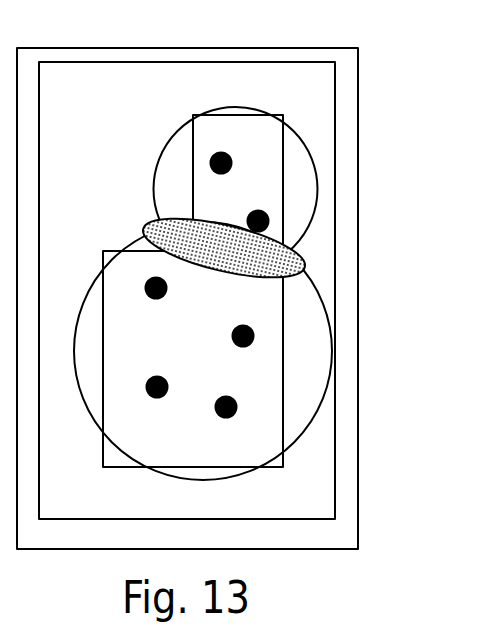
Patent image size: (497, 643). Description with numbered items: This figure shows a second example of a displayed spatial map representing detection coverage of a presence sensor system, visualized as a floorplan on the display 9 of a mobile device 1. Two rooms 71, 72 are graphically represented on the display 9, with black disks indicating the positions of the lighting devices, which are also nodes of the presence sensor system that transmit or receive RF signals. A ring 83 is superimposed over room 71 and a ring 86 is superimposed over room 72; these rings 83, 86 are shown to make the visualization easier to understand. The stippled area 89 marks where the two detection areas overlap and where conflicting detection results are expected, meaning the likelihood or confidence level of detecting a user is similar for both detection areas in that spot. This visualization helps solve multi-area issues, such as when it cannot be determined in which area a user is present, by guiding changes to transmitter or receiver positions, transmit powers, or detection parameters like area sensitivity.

The mobile device 1 is at (358, 480).
The display 9 is at (335, 519).
The room 71 is at (113, 467).
The room 72 is at (218, 107).
The ring 83 is at (320, 295).
The ring 86 is at (308, 146).
The area 89 is at (303, 263).